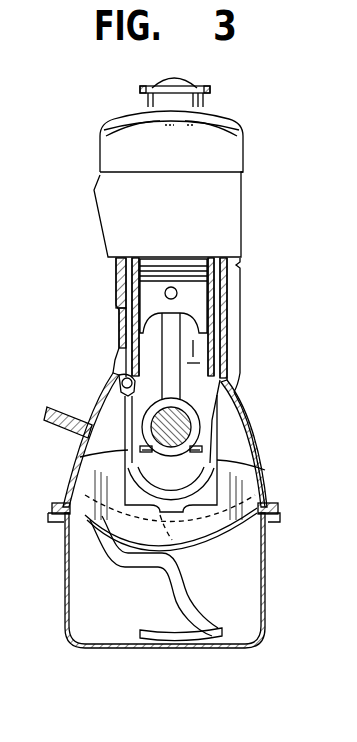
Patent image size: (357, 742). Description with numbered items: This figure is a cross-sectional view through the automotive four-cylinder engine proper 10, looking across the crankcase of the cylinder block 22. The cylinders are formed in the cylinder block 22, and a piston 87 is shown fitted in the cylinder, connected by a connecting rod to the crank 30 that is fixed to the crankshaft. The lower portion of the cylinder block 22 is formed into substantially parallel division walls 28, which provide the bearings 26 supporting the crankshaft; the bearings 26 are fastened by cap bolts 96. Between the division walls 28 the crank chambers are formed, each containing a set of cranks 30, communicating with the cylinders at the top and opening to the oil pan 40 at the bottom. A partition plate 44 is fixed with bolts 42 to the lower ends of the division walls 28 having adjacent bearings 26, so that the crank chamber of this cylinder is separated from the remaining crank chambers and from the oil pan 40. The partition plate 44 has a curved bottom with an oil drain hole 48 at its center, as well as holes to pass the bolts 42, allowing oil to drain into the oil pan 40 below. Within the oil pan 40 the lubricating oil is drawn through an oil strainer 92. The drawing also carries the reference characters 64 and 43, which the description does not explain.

The engine proper 10 is at (250, 178).
The cylinder block 22 is at (232, 280).
The pistons 87 is at (165, 262).
The division walls 28 is at (228, 402).
The bearings 26 is at (82, 452).
The cranks 30 is at (192, 462).
The intake pipe 64 is at (70, 406).
The cap bolts 96 is at (72, 500).
The oil pan 40 is at (266, 622).
The partition plates 44 is at (238, 530).
The oil drain hole 48 is at (165, 550).
The oil strainer 92 is at (145, 640).
The bolts 42 is at (175, 543).
The oil sump 43 is at (128, 618).